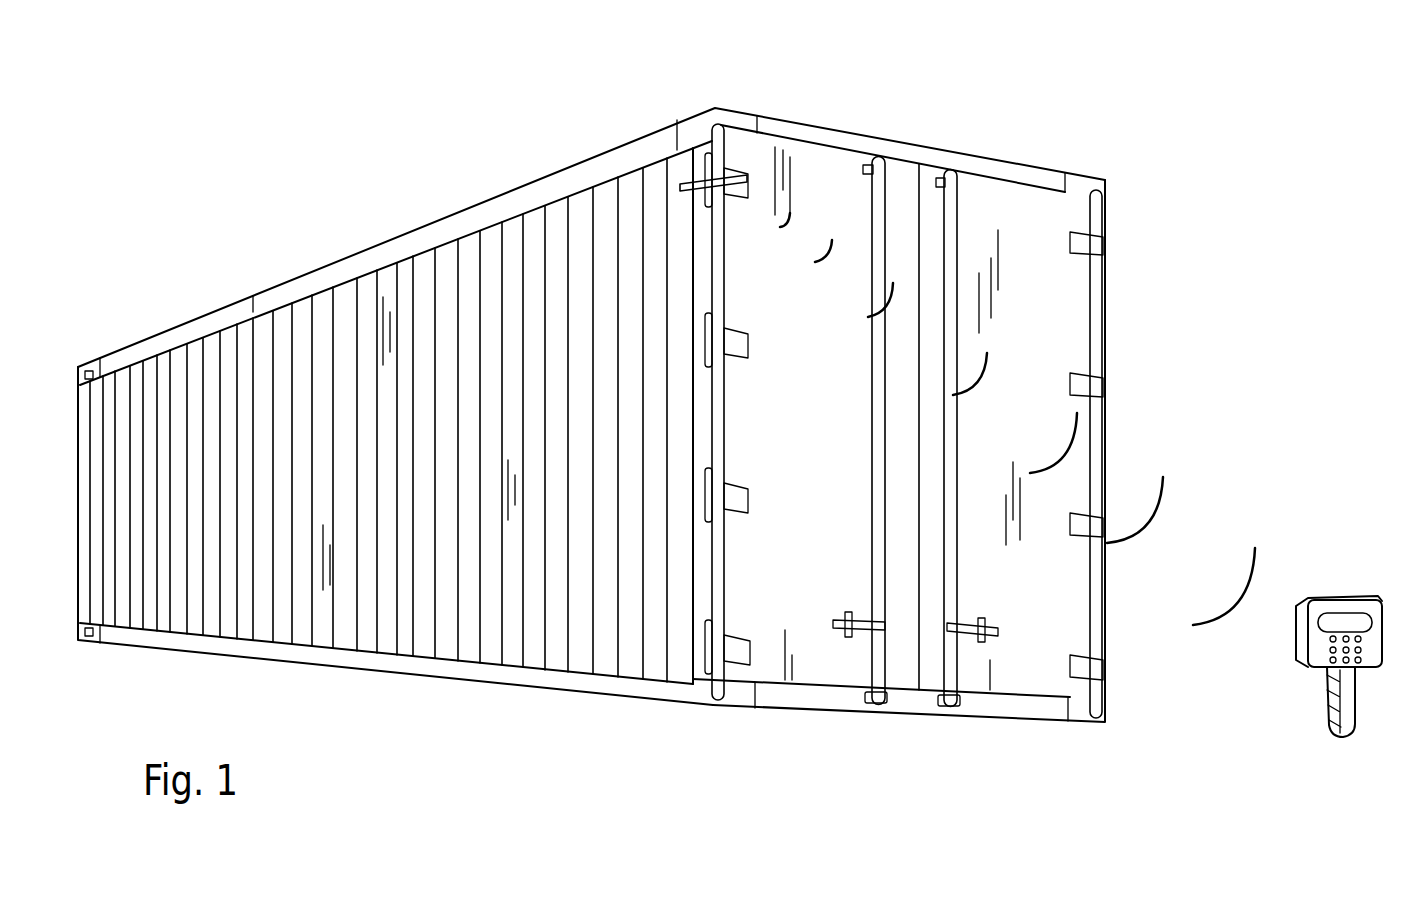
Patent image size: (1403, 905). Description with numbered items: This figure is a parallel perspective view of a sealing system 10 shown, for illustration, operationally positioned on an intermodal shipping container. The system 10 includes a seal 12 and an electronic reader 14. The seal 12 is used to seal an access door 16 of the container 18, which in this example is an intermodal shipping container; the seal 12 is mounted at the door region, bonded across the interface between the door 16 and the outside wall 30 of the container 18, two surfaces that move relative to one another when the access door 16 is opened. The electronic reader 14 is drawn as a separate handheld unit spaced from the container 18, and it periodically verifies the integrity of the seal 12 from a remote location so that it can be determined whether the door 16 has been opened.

The sealing system 10 is at (1247, 260).
The seal 12 is at (680, 182).
The electronic reader 14 is at (1343, 593).
The access door 16 is at (832, 175).
The container 18 is at (347, 262).
The outside wall 30 is at (535, 210).